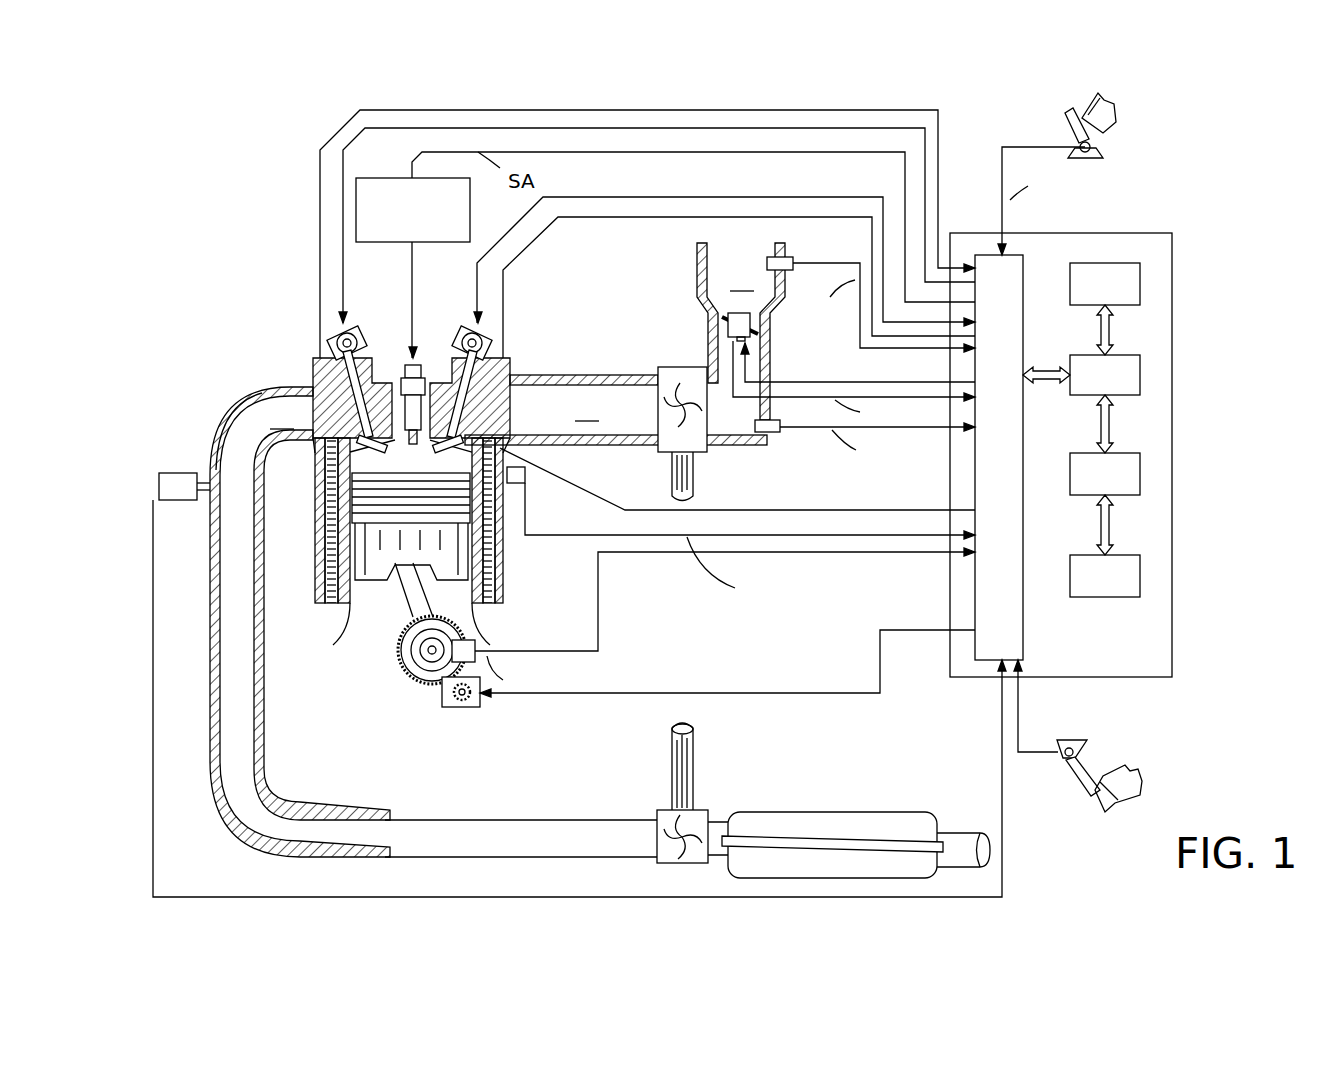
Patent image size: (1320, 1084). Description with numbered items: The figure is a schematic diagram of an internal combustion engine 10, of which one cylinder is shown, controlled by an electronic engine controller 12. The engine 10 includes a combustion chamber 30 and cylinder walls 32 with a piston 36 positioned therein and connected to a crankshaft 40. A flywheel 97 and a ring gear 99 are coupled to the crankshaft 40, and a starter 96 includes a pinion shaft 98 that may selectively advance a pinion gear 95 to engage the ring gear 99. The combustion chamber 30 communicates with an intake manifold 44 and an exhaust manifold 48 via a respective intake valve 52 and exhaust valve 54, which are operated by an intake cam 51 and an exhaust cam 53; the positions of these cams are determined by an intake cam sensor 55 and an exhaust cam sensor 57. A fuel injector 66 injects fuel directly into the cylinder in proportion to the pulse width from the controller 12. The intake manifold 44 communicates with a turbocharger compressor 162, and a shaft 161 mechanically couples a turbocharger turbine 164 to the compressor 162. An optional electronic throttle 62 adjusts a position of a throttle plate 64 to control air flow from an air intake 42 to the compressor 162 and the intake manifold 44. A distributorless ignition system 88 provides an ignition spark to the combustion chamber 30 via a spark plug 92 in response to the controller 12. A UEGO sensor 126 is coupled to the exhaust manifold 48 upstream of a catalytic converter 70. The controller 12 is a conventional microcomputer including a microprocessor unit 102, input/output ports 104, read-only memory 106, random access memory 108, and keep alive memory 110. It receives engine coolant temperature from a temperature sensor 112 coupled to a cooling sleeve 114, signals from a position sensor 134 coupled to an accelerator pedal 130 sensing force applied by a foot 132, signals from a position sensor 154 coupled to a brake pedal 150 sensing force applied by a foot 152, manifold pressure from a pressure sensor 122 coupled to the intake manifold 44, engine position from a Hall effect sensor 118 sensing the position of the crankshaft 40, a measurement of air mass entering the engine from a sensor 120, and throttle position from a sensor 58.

The internal combustion engine 10 is at (246, 313).
The electronic engine controller 12 is at (1165, 233).
The combustion chamber 30 is at (413, 455).
The cylinder walls 32 is at (348, 618).
The piston 36 is at (397, 592).
The crankshaft 40 is at (415, 680).
The air intake 42 is at (741, 331).
The intake manifold 44 is at (616, 410).
The exhaust manifold 48 is at (300, 622).
The intake cam 51 is at (468, 318).
The intake valve 52 is at (455, 424).
The exhaust cam 53 is at (357, 318).
The exhaust valve 54 is at (362, 428).
The intake cam sensor 55 is at (484, 347).
The exhaust cam sensor 57 is at (335, 343).
The throttle position sensor 58 is at (728, 336).
The electronic throttle 62 is at (760, 320).
The throttle plate 64 is at (720, 320).
The fuel injector 66 is at (532, 460).
The catalytic converter 70 is at (768, 812).
The distributorless ignition system 88 is at (365, 178).
The spark plug 92 is at (420, 365).
The pinion gear 95 is at (468, 705).
The starter 96 is at (478, 702).
The flywheel 97 is at (410, 650).
The pinion shaft 98 is at (456, 700).
The ring gear 99 is at (430, 690).
The microprocessor unit 102 is at (1140, 372).
The input/output ports 104 is at (1023, 262).
The read-only memory 106 is at (1140, 283).
The random access memory 108 is at (1140, 473).
The keep alive memory 110 is at (1140, 575).
The temperature sensor 112 is at (523, 486).
The cooling sleeve 114 is at (490, 555).
The Hall effect sensor 118 is at (478, 645).
The air mass sensor 120 is at (786, 257).
The pressure sensor 122 is at (775, 433).
The Universal Exhaust Gas Oxygen (UEGO) sensor 126 is at (159, 473).
The accelerator pedal 130 is at (1111, 115).
The foot 132 is at (1112, 106).
The position sensor 134 is at (1085, 147).
The brake pedal 150 is at (1086, 773).
The foot 152 is at (1128, 767).
The position sensor 154 is at (1060, 747).
The shaft 161 is at (670, 466).
The turbocharger compressor 162 is at (658, 370).
The turbocharger turbine 164 is at (660, 810).